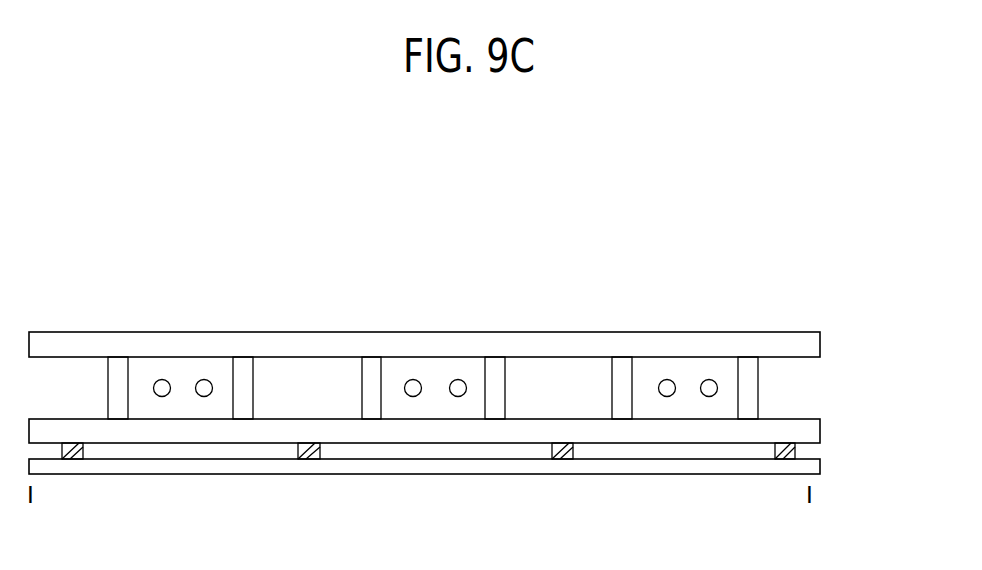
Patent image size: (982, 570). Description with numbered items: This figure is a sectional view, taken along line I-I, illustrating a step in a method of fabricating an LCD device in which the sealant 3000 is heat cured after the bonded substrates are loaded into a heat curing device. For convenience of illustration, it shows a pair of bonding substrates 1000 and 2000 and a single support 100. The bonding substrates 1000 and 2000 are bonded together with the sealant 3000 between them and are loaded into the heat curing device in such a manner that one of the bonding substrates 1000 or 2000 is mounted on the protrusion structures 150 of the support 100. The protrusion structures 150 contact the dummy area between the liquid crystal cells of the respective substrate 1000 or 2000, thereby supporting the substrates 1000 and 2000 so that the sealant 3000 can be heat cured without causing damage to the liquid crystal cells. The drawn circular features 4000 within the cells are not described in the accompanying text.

The bonding substrate 2000 is at (821, 340).
The bonding substrate 1000 is at (821, 428).
The support 100 is at (821, 464).
The sealant 3000 is at (117, 367).
The via hole 4000 is at (204, 379).
The protrusion structure 150 is at (73, 459).